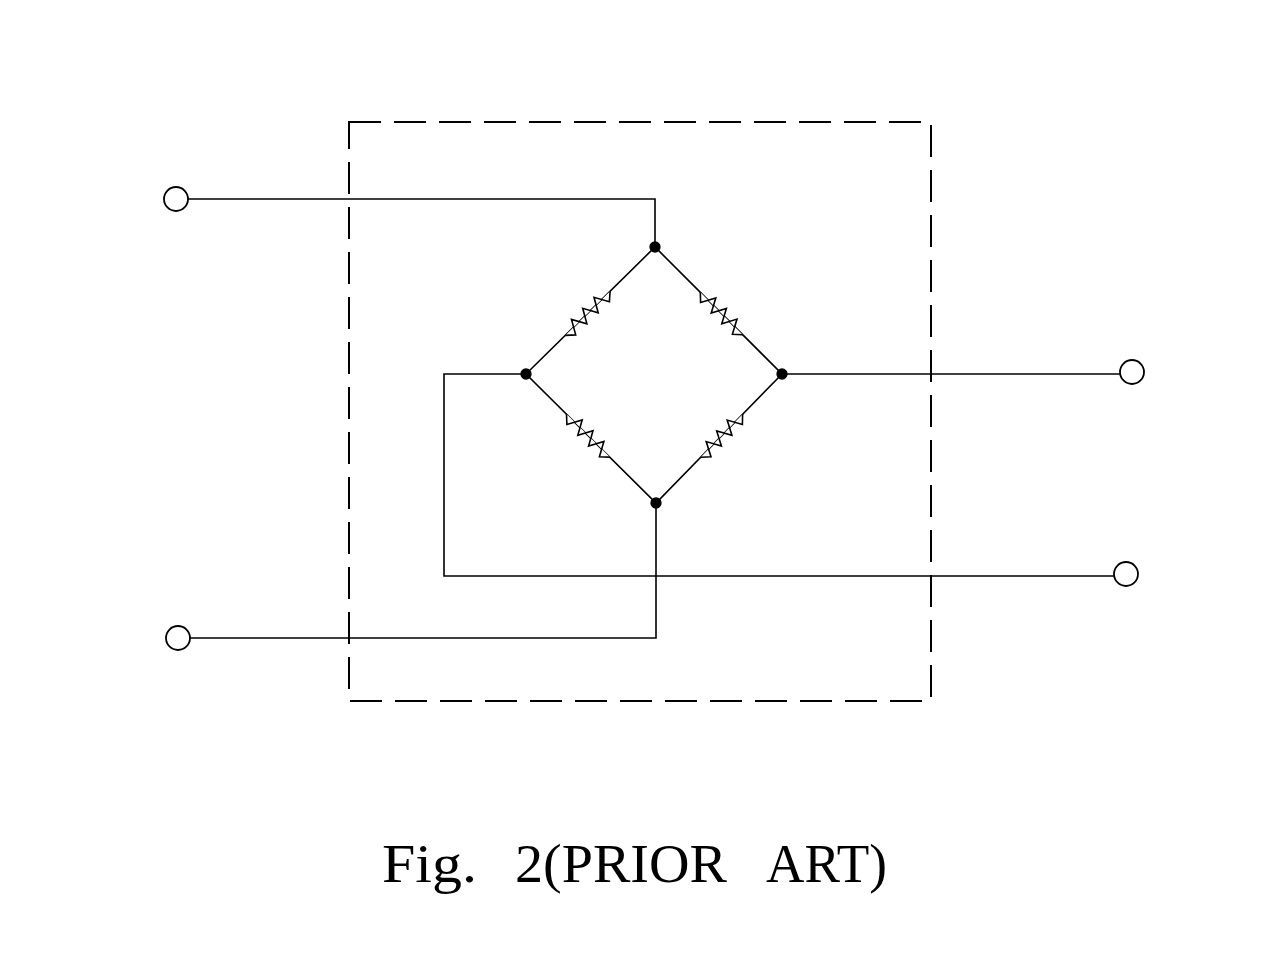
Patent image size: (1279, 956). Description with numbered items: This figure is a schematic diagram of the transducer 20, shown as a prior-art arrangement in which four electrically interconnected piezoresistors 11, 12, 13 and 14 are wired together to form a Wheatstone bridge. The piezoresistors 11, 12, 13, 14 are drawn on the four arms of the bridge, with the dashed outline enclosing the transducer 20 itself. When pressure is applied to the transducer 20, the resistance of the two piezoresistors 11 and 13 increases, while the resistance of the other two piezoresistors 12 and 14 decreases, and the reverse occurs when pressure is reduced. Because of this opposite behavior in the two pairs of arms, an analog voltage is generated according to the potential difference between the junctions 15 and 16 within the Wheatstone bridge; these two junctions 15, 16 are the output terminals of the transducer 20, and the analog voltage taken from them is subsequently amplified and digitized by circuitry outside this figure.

The piezoresistor 11 is at (575, 298).
The piezoresistor 12 is at (575, 450).
The piezoresistor 13 is at (730, 450).
The piezoresistor 14 is at (733, 298).
The junction 15 is at (1150, 358).
The junction 16 is at (1147, 567).
The transducer 20 is at (910, 93).